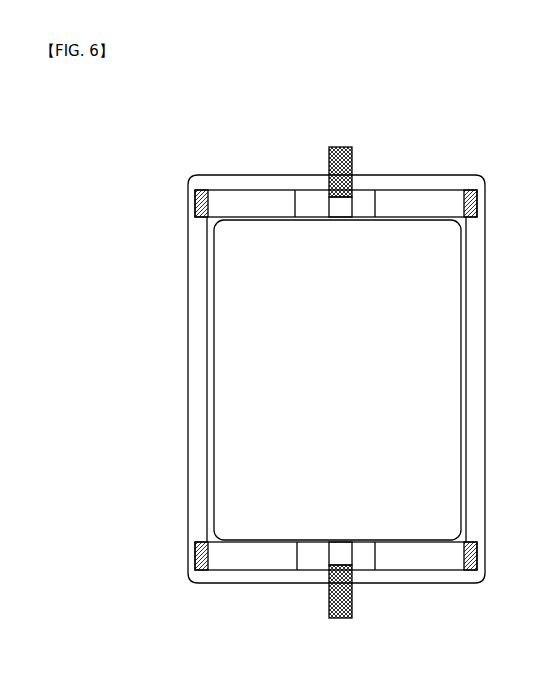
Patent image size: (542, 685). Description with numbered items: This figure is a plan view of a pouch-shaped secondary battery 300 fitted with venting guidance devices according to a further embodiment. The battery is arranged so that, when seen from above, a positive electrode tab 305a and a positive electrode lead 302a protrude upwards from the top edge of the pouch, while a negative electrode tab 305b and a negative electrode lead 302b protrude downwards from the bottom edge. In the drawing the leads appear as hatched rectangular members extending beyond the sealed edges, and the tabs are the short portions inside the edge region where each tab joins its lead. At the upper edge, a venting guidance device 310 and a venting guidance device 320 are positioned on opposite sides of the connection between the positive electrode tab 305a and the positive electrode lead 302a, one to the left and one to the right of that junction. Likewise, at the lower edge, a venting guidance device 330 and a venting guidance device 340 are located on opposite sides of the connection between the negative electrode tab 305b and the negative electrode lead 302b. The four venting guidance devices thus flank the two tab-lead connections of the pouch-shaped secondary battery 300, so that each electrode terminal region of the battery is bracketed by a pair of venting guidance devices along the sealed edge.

The pouch-shaped secondary battery 300 is at (97, 119).
The positive electrode lead 302a is at (357, 170).
The negative electrode lead 302b is at (360, 611).
The positive electrode tab 305a is at (327, 203).
The negative electrode tab 305b is at (353, 556).
The venting guidance device 310 is at (230, 181).
The venting guidance device 320 is at (437, 181).
The venting guidance device 330 is at (242, 578).
The venting guidance device 340 is at (451, 580).